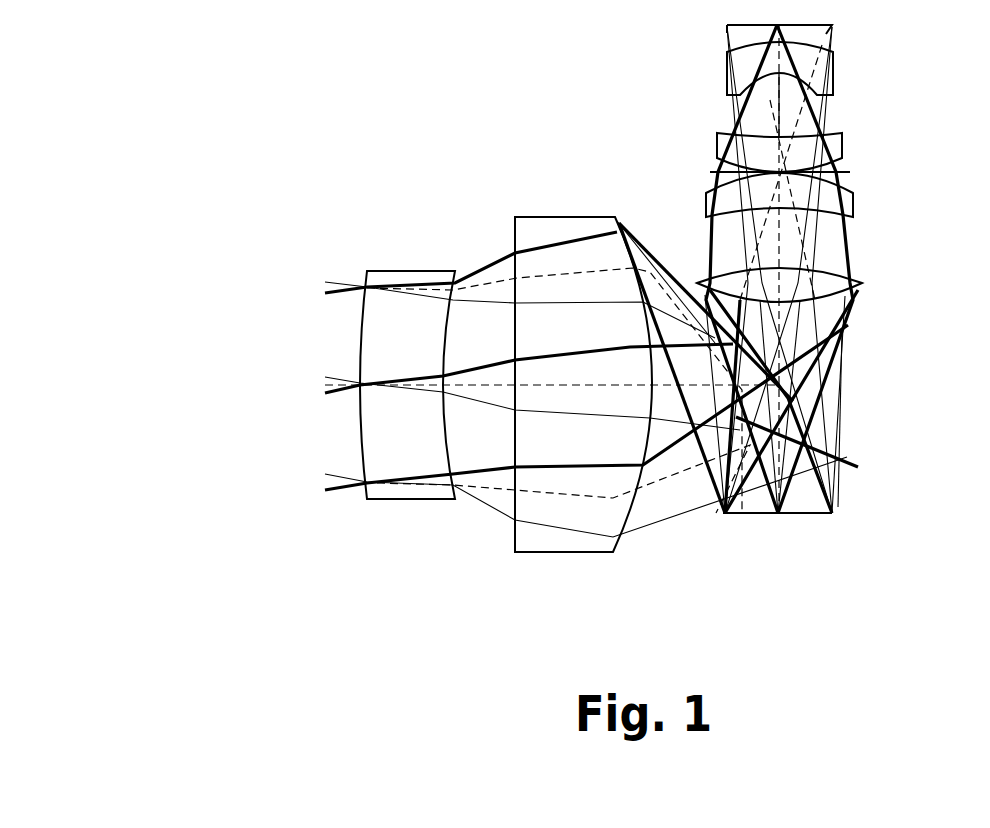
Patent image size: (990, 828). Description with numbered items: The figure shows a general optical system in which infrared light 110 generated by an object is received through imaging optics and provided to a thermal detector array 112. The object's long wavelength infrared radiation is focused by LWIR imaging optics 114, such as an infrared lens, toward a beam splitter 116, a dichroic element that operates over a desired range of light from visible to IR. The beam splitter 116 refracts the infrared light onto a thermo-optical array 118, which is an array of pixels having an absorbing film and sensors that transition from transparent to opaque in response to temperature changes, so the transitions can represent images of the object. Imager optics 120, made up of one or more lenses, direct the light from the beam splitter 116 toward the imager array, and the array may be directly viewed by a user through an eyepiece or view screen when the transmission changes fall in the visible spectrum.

The infrared light 110 is at (308, 268).
The thermal detector array 112 is at (727, 27).
The LWIR imaging optics 114 is at (620, 568).
The beam splitter 116 is at (843, 450).
The thermo-optical array 118 is at (832, 513).
The imager optics 120 is at (869, 32).